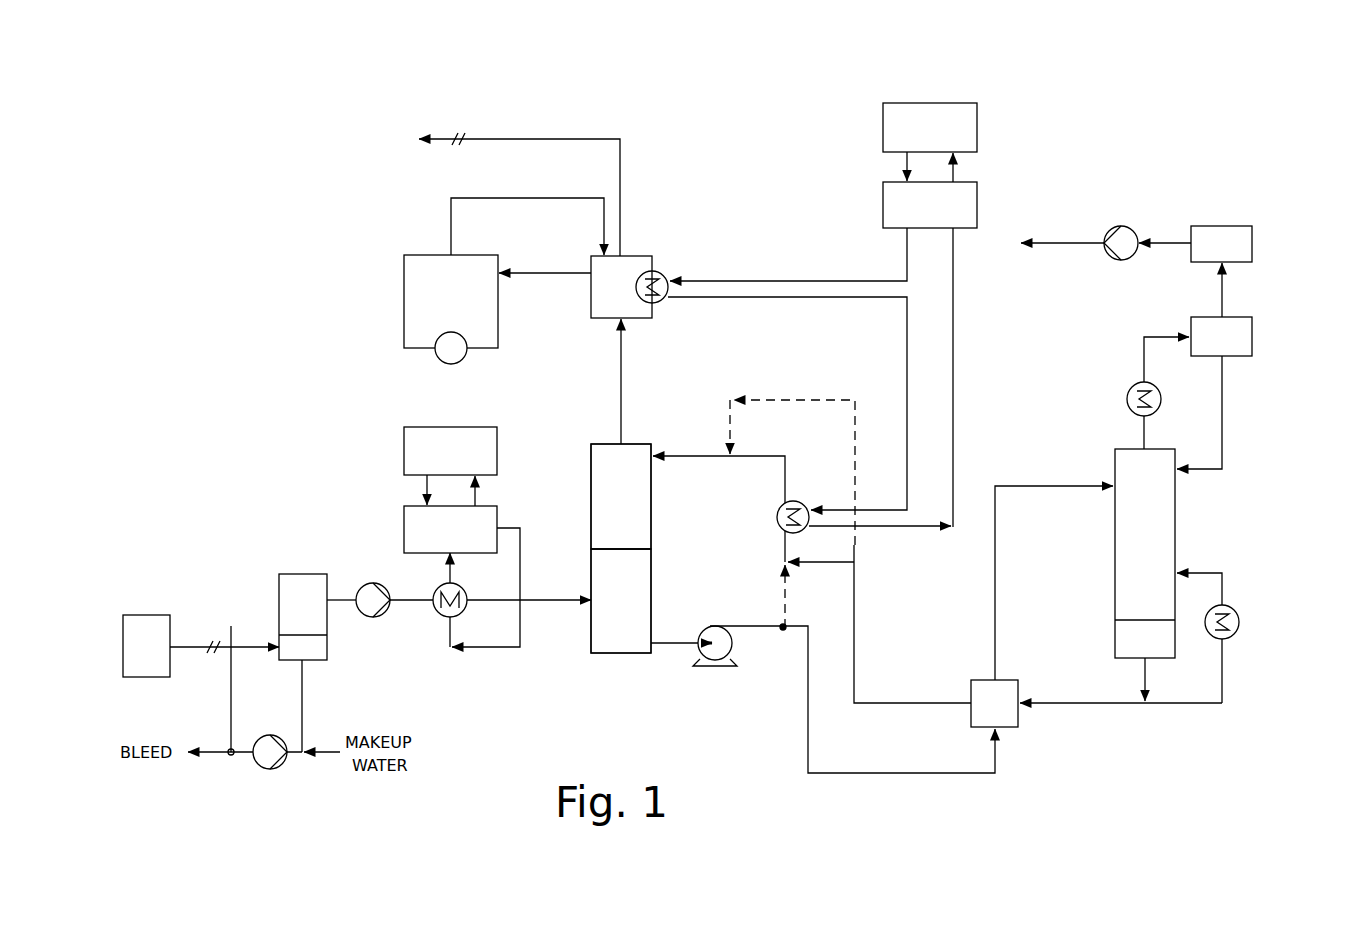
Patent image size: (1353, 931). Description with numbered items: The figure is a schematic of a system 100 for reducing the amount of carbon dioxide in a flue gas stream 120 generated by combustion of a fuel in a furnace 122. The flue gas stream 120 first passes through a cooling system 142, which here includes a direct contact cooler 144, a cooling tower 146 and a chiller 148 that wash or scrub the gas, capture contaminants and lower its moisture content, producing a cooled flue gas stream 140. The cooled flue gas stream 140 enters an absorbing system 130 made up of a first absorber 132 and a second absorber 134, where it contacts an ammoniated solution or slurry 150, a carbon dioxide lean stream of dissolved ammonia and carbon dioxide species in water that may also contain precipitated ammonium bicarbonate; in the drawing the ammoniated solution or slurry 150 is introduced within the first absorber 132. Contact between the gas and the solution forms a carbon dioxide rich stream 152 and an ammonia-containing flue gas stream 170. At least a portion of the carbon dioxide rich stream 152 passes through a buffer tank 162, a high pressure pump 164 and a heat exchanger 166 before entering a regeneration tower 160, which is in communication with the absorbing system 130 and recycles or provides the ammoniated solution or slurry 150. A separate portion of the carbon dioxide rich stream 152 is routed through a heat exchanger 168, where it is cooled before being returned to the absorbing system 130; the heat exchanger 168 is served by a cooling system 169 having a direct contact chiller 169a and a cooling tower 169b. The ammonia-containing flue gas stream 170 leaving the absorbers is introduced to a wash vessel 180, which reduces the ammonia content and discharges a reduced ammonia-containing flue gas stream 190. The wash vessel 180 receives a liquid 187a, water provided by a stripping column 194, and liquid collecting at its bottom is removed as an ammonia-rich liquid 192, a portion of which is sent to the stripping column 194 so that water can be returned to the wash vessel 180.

The system 100 is at (404, 59).
The flue gas stream 120 is at (220, 652).
The furnace 122 is at (147, 615).
The absorbing system 130 is at (585, 684).
The first absorber 132 is at (640, 532).
The second absorber 134 is at (638, 593).
The cooled flue gas stream 140 is at (552, 610).
The cooling system 142 is at (382, 638).
The direct contact cooler 144 is at (303, 573).
The cooling tower 146 is at (404, 448).
The chiller 148 is at (404, 527).
The ammoniated solution or slurry 150 is at (668, 458).
The CO2 rich stream 152 is at (683, 647).
The regeneration tower 160 is at (1175, 532).
The buffer tank 162 is at (1267, 291).
The high pressure pump 164 is at (1063, 245).
The heat exchanger 166 is at (1018, 680).
The heat exchanger 168 is at (778, 522).
The cooling system 169 is at (944, 163).
The direct contact chiller 169a is at (883, 198).
The cooling tower 169b is at (883, 122).
The ammonia-containing flue gas stream 170 is at (628, 410).
The wash vessel 180 is at (635, 255).
The liquid 187a is at (580, 198).
The reduced ammonia-containing flue gas stream 190 is at (547, 137).
The ammonia-rich liquid 192 is at (562, 272).
The stripping column 194 is at (404, 298).